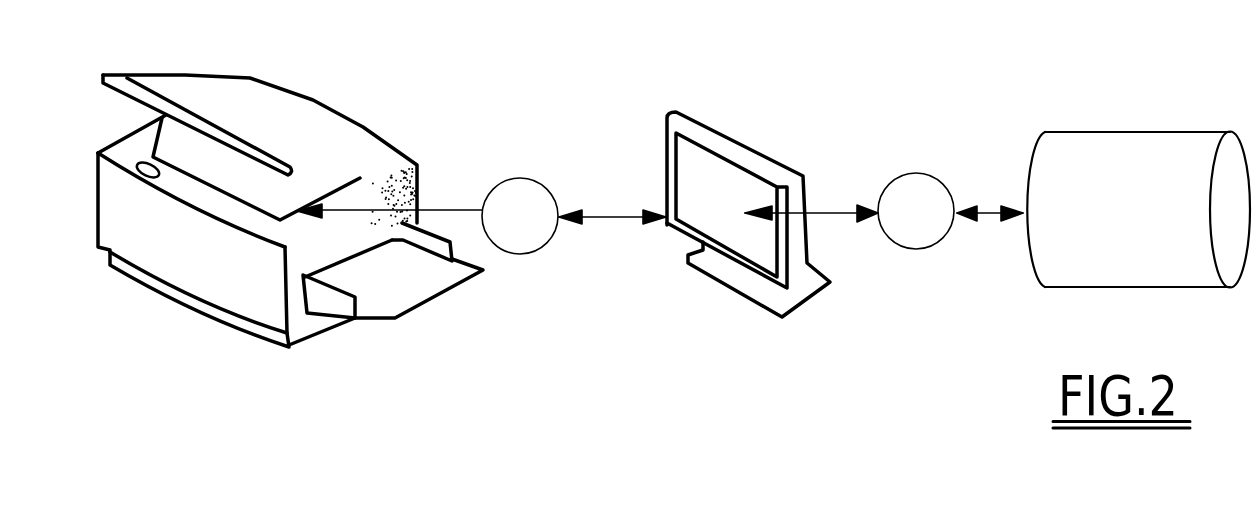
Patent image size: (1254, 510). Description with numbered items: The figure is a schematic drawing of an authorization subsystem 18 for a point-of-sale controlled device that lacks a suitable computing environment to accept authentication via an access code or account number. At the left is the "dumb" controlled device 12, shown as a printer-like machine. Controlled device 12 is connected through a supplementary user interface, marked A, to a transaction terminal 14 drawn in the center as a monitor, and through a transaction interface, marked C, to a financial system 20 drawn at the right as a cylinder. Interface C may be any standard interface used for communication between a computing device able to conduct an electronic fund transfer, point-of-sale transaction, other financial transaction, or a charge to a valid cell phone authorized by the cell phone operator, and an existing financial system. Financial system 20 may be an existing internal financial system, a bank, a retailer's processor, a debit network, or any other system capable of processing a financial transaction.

The controlled device 12 is at (320, 127).
The transaction terminal 14 is at (683, 166).
The authorization subsystem 18 is at (825, 112).
The financial system 20 is at (1158, 142).